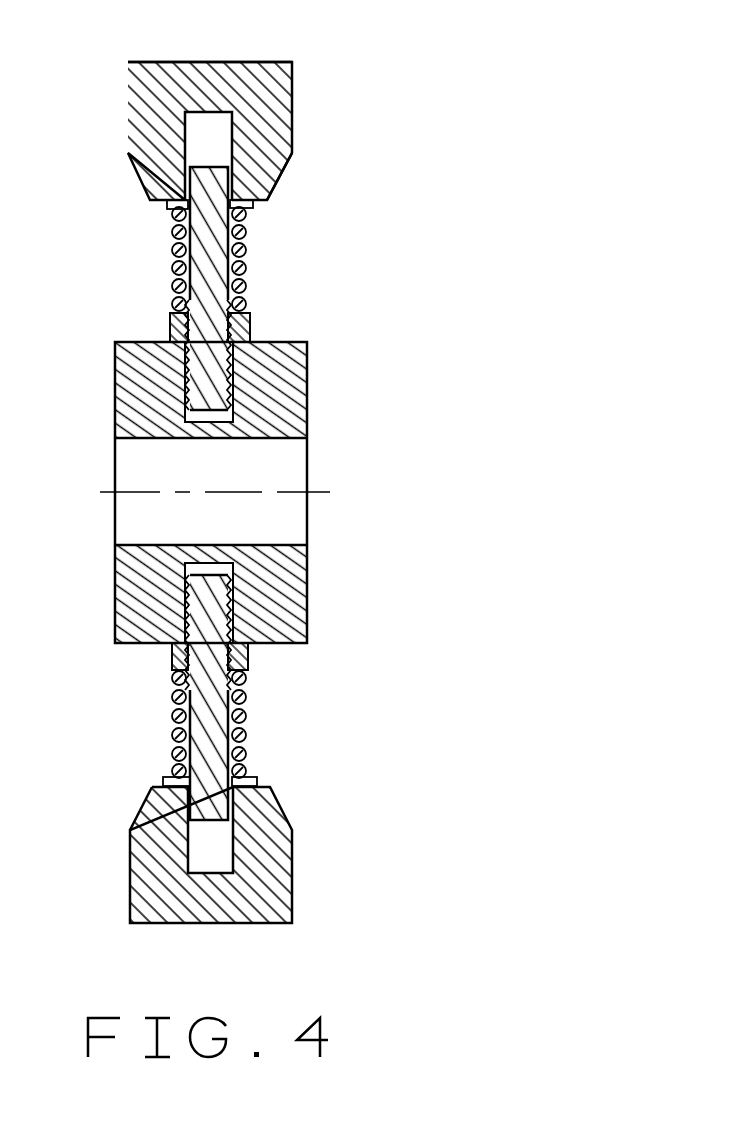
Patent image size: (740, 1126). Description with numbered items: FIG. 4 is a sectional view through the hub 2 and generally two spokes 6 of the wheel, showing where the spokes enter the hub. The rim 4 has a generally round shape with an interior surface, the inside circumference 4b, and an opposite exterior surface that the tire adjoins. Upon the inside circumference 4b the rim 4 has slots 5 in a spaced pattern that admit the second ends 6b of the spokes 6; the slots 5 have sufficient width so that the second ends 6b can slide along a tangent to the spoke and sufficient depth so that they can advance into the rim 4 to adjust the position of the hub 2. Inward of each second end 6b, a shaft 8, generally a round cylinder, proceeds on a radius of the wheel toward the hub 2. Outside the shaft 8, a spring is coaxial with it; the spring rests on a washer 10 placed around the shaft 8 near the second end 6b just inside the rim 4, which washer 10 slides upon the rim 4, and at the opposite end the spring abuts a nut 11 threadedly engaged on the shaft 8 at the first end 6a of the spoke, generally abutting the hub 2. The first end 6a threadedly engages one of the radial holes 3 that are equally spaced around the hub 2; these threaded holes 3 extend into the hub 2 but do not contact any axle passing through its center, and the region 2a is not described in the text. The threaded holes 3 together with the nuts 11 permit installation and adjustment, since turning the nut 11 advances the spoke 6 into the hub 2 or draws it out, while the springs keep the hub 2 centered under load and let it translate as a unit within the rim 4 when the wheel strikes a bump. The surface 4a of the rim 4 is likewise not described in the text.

The hub 2 is at (310, 372).
The bore 2a is at (285, 475).
The radial holes 3 is at (240, 357).
The rim 4 is at (213, 73).
The outer face 4a is at (194, 62).
The inside circumference 4b is at (267, 195).
The slots 5 is at (233, 115).
The spoke 6 is at (172, 272).
The first end 6a is at (160, 360).
The second end 6b is at (172, 236).
The shaft 8 is at (215, 262).
The washer 10 is at (172, 205).
The nut 11 is at (172, 327).